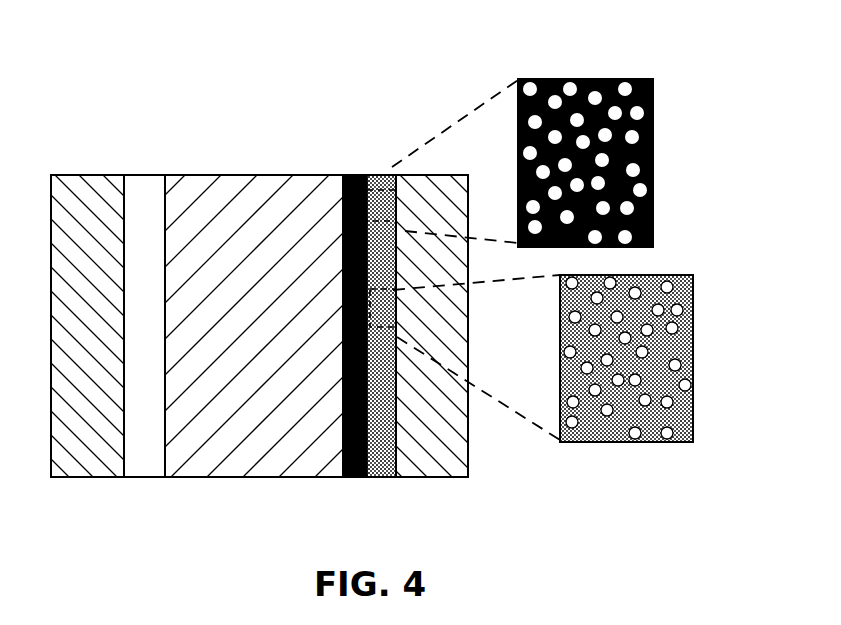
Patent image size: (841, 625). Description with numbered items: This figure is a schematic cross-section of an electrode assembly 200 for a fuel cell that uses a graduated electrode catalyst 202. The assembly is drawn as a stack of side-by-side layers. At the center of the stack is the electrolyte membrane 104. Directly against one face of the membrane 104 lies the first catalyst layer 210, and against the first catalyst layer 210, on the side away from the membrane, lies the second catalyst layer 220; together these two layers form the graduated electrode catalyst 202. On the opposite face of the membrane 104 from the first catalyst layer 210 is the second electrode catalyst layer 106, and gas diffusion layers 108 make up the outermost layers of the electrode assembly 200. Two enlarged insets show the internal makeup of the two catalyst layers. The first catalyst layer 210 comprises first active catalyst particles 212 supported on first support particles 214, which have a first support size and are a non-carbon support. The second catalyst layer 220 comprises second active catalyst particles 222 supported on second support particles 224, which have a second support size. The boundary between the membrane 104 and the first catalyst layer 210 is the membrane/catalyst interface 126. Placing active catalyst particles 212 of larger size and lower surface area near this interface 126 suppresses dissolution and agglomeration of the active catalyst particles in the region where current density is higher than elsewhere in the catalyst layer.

The electrode assembly 200 is at (120, 128).
The gas diffusion layers 108 is at (86, 455).
The second electrode catalyst layer 106 is at (147, 455).
The electrolyte membrane 104 is at (264, 455).
The membrane/catalyst interface 126 is at (342, 247).
The graduated electrode catalyst 202 is at (396, 173).
The first catalyst layer 210 is at (355, 476).
The second catalyst layer 220 is at (382, 470).
The first active catalyst particles 212 is at (625, 86).
The first support particles 214 is at (653, 90).
The second active catalyst particles 222 is at (635, 440).
The second support particles 224 is at (680, 415).